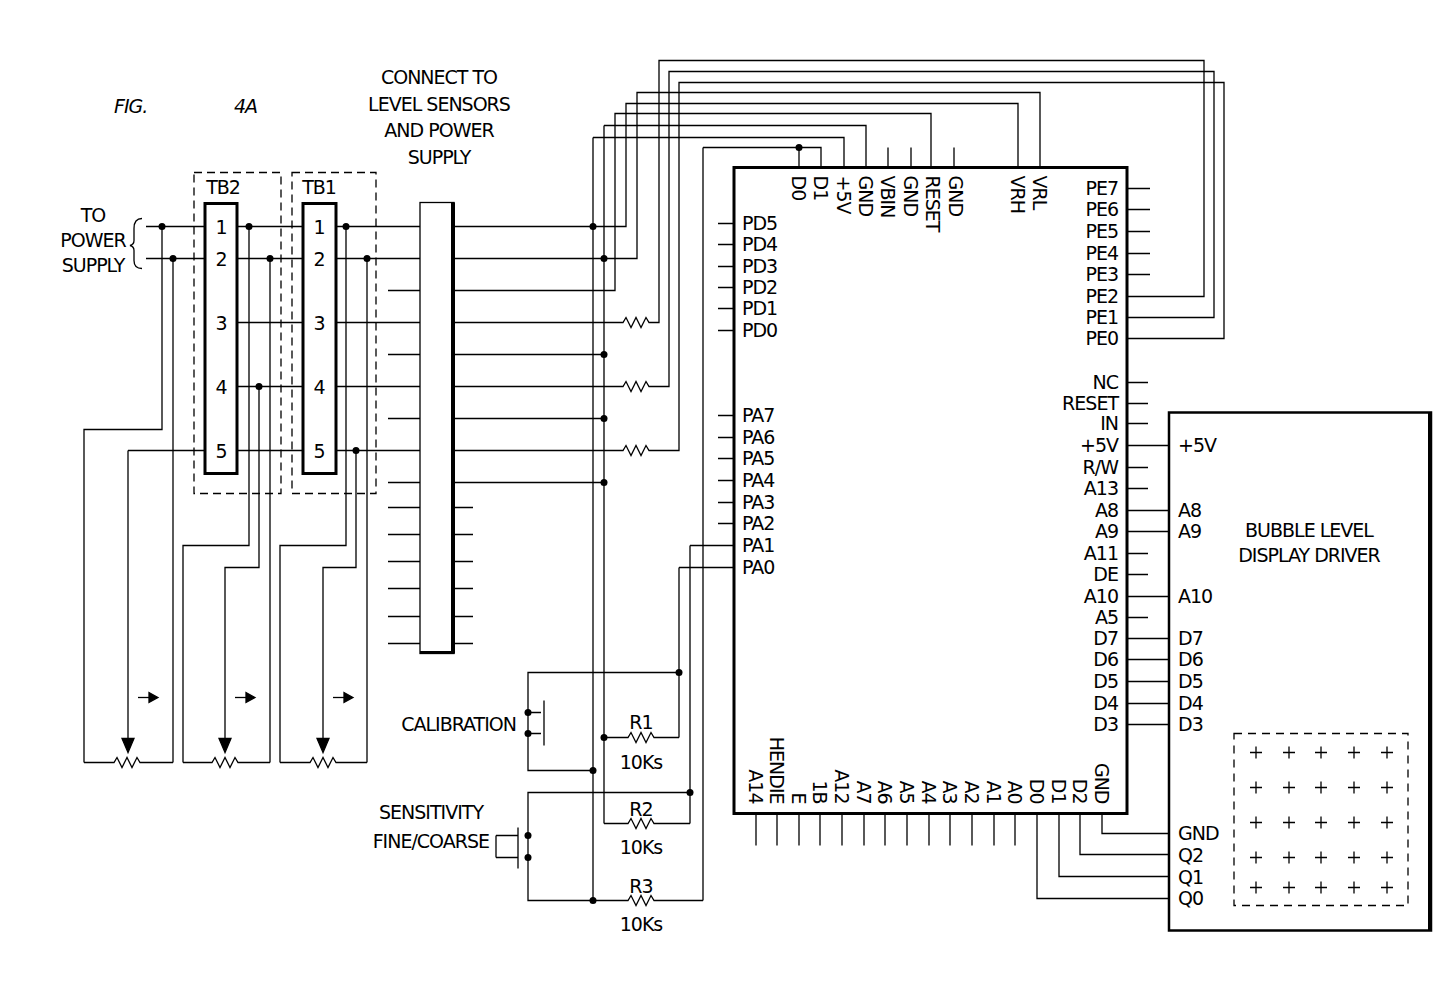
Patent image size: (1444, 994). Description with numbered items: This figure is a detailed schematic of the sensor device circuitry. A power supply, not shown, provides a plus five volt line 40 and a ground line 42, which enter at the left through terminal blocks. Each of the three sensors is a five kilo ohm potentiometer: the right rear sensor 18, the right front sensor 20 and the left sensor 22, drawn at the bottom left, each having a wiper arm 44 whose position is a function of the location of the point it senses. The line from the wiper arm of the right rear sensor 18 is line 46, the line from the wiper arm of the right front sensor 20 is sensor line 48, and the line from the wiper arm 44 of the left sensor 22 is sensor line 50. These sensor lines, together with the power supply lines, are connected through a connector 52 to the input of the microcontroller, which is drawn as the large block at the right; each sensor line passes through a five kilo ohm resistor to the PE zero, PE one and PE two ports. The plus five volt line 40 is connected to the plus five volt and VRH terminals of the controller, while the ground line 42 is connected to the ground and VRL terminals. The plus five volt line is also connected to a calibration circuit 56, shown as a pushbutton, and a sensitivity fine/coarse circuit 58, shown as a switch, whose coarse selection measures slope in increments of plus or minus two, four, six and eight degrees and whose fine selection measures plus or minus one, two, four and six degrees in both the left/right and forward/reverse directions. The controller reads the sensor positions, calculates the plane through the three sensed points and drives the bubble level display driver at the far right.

The right rear sensor 18 is at (128, 583).
The right front sensor 20 is at (228, 581).
The left sensor 22 is at (325, 567).
The +5 volt line 40 is at (178, 224).
The ground line 42 is at (150, 262).
The wiper arm 44 is at (127, 722).
The line from the wiper arm of the right rear sensor 46 is at (570, 457).
The sensor line 48 is at (570, 393).
The sensor line 50 is at (657, 82).
The connector 52 is at (455, 520).
The calibration circuit 56 is at (507, 764).
The sensitivity fine/coarse circuit 58 is at (507, 891).